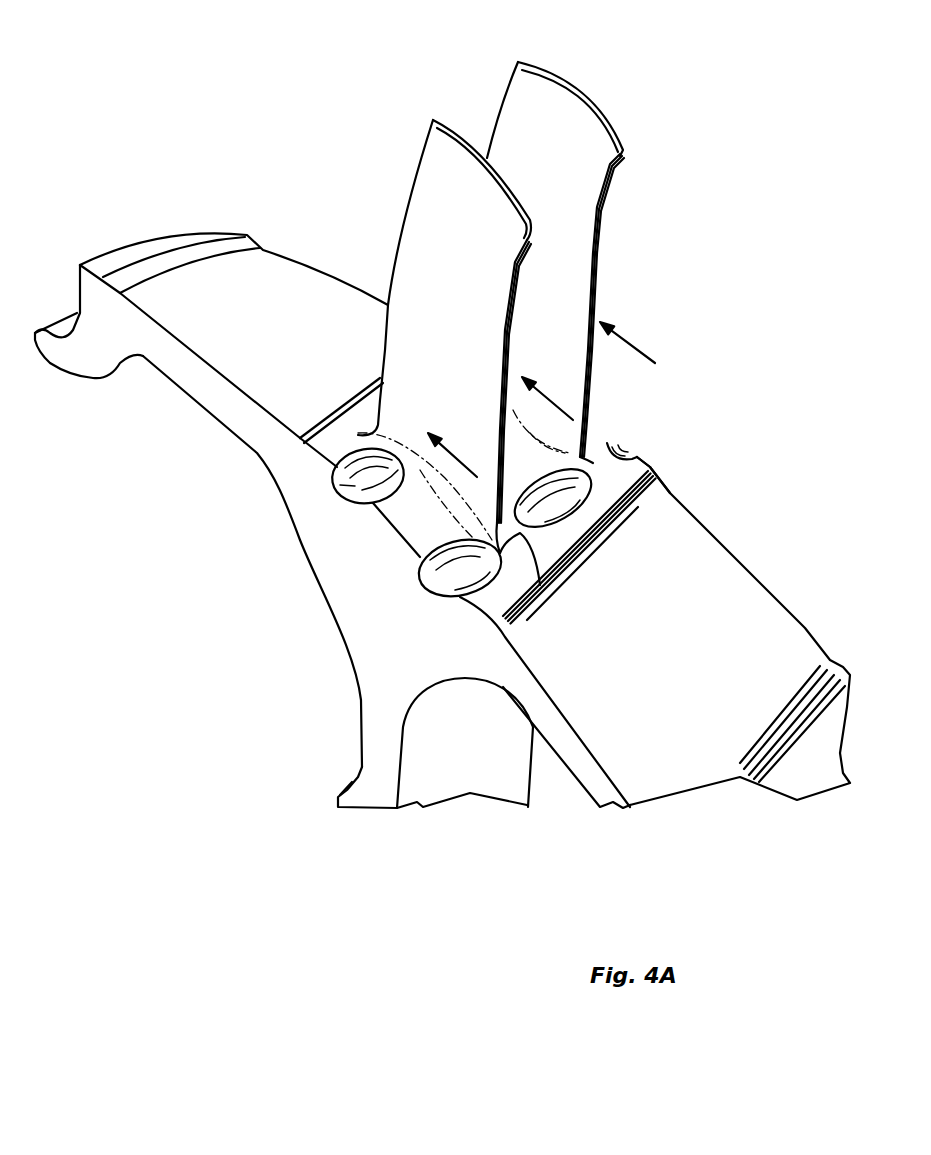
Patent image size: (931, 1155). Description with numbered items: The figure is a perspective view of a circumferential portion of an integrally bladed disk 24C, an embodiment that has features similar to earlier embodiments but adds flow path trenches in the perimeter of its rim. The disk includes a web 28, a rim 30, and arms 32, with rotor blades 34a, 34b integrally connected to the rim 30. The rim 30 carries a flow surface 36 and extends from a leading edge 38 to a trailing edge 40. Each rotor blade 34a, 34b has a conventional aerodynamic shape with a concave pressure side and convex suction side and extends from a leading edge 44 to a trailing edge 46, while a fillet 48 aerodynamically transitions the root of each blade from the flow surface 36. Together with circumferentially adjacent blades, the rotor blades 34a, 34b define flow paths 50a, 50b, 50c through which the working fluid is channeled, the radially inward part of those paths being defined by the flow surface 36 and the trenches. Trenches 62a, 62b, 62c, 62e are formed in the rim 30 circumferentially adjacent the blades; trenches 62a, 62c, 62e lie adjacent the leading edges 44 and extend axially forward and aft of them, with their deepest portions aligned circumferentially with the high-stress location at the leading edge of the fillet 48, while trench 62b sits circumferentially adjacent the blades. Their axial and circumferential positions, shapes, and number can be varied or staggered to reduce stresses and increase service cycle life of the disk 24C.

The integrally bladed disk 24C is at (260, 135).
The web 28 is at (358, 767).
The rim 30 is at (367, 603).
The arms 32 is at (173, 290).
The rotor blade 34a is at (454, 135).
The rotor blade 34b is at (580, 98).
The flow surface 36 is at (425, 523).
The leading edge 38 is at (652, 467).
The trailing edge 40 is at (323, 417).
The leading edge 44 is at (597, 220).
The trailing edge 46 is at (510, 83).
The fillet 48 is at (587, 467).
The flow path 50a is at (460, 457).
The flow path 50b is at (553, 397).
The flow path 50c is at (637, 343).
The trench 62a is at (460, 577).
The trench 62b is at (337, 483).
The trench 62c is at (580, 500).
The trench 62e is at (628, 447).